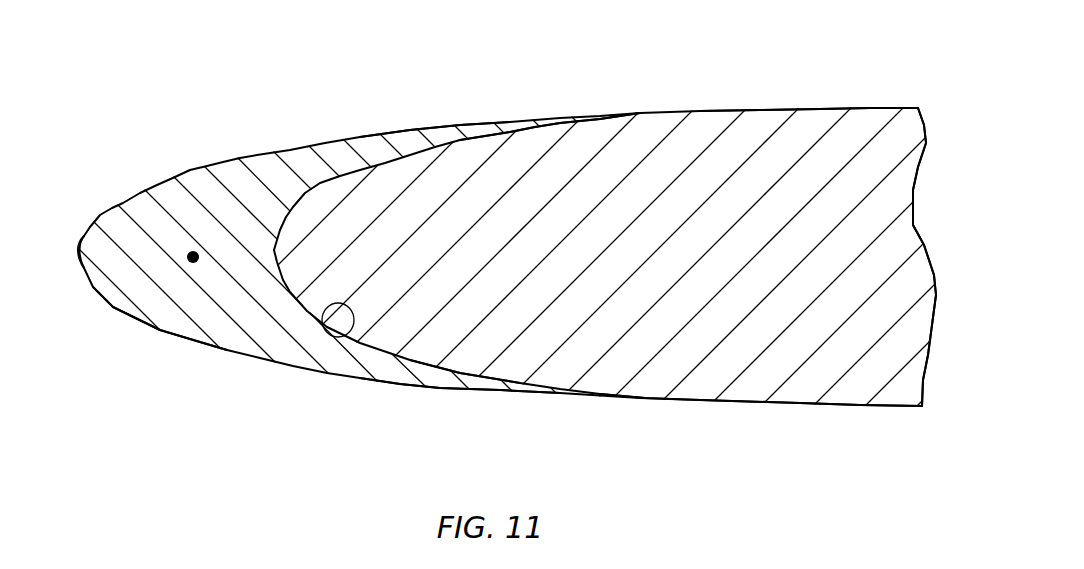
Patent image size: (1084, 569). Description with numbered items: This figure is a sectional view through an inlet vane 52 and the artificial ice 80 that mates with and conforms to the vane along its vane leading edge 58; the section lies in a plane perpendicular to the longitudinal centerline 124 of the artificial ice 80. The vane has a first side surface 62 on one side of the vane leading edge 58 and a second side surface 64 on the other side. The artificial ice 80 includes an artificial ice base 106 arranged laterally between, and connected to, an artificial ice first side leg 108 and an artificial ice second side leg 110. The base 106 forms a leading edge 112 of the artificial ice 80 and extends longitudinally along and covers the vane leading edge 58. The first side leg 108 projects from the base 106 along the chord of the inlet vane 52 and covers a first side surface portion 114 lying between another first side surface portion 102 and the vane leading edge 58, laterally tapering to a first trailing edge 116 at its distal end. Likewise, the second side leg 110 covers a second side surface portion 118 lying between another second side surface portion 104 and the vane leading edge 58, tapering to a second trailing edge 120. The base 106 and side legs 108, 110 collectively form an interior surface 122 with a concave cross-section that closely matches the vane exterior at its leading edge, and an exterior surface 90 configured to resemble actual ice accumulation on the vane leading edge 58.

The inlet vane 52 is at (918, 98).
The vane leading edge 58 is at (272, 258).
The first side surface 62 is at (880, 406).
The second side surface 64 is at (878, 108).
The artificial ice 80 is at (168, 153).
The exterior surface 90 is at (268, 150).
The first side surface portion 102 is at (778, 403).
The second side surface portion 104 is at (777, 108).
The artificial ice base 106 is at (167, 334).
The artificial ice first side leg 108 is at (432, 390).
The artificial ice second side leg 110 is at (425, 123).
The leading edge of the artificial ice 112 is at (78, 257).
The first side surface portion 114 is at (460, 373).
The first trailing edge 116 is at (645, 398).
The second side surface portion 118 is at (497, 124).
The second trailing edge 120 is at (640, 113).
The interior surface 122 is at (342, 338).
The longitudinal centerline 124 is at (198, 262).